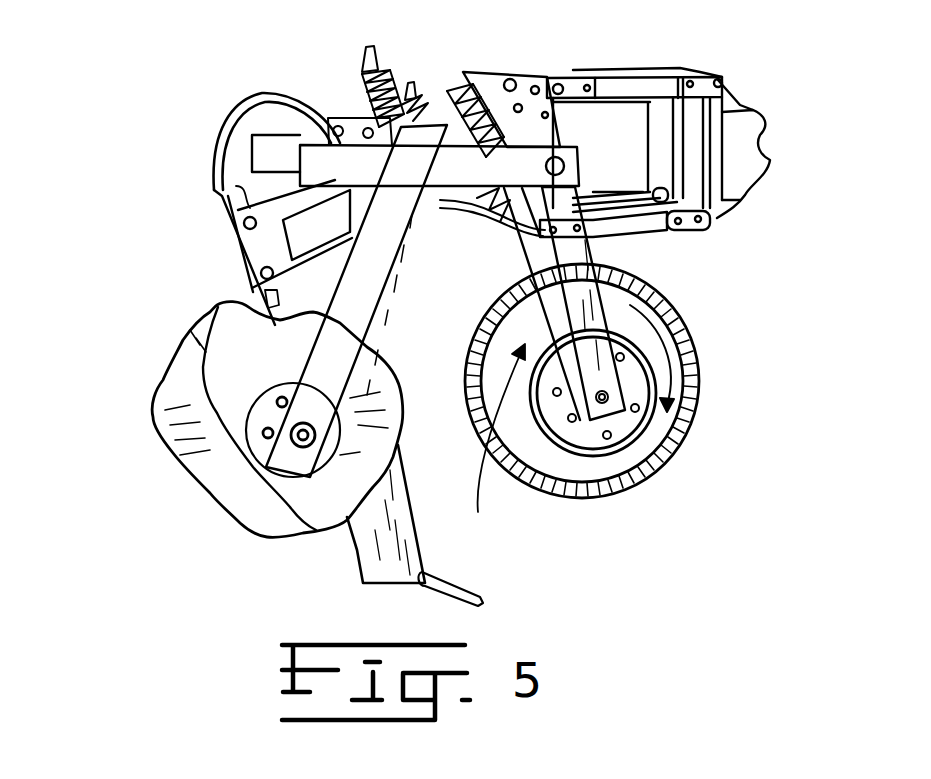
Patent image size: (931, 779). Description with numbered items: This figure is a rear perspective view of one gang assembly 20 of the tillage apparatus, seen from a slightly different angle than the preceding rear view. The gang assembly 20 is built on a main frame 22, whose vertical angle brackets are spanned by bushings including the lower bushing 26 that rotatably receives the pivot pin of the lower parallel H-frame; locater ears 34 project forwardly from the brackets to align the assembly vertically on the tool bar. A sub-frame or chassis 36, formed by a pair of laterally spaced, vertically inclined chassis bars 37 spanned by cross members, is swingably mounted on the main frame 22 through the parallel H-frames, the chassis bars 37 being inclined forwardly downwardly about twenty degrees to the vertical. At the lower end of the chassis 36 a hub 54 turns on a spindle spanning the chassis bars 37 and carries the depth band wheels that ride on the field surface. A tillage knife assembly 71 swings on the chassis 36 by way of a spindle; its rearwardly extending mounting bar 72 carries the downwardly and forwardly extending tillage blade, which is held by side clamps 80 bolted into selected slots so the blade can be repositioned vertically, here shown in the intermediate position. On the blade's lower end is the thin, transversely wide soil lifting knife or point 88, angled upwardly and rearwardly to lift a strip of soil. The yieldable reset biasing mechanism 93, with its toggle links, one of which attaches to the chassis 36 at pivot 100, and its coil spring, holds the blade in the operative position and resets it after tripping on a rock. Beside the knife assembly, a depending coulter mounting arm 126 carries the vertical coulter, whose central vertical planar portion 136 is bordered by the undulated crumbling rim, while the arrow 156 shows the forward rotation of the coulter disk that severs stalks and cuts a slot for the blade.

The gang assembly 20 is at (680, 46).
The main frame 22 is at (760, 99).
The lower bushing 26 is at (700, 236).
The locater ears 34 is at (770, 143).
The sub-frame or chassis 36 is at (510, 79).
The chassis bars 37 is at (563, 262).
The hub 54 is at (688, 500).
The tillage knife assembly 71 is at (199, 267).
The mounting bar 72 is at (440, 205).
The side clamps 80 is at (413, 176).
The soil lifting tillage knife or point 88 is at (478, 590).
The yieldable reset biasing mechanism 93 is at (310, 90).
The pivot 100 is at (527, 70).
The coulter mounting arm 126 is at (333, 358).
The central vertical planar portion 136 is at (511, 452).
The arrow 156 is at (697, 365).